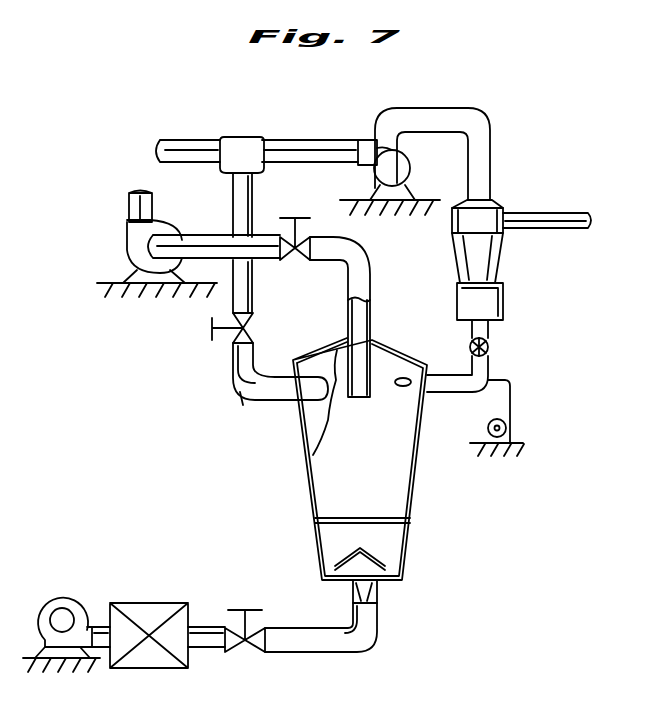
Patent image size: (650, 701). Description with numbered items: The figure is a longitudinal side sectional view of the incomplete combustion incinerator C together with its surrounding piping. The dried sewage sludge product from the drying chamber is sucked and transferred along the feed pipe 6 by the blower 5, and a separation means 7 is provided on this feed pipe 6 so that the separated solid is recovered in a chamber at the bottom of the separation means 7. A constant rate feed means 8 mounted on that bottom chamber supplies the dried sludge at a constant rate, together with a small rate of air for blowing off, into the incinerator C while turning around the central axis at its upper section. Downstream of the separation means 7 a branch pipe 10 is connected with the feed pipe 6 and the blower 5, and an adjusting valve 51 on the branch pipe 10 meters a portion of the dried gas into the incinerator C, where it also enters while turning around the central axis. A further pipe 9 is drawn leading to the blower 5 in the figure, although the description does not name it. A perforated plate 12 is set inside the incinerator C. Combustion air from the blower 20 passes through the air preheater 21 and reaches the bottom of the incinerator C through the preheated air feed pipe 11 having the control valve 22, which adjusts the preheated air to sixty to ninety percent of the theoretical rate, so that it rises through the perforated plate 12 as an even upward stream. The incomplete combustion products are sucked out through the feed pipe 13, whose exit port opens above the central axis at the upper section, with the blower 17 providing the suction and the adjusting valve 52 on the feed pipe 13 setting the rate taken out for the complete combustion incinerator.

The blower 5 is at (370, 140).
The feed pipe 6 is at (436, 112).
The separation means 7 is at (495, 225).
The constant rate feed means 8 is at (449, 393).
The gas supply pipe 9 is at (302, 150).
The branch pipe 10 is at (268, 372).
The preheated air feed pipe 11 is at (380, 600).
The perforated plate 12 is at (392, 525).
The feed pipe 13 is at (373, 287).
The blower 17 is at (133, 232).
The blower 20 is at (70, 602).
The air preheater 21 is at (153, 610).
The control valve 22 is at (250, 607).
The adjusting valve 51 is at (209, 332).
The adjusting valve 52 is at (294, 218).
The incomplete combustion incinerator C is at (434, 490).